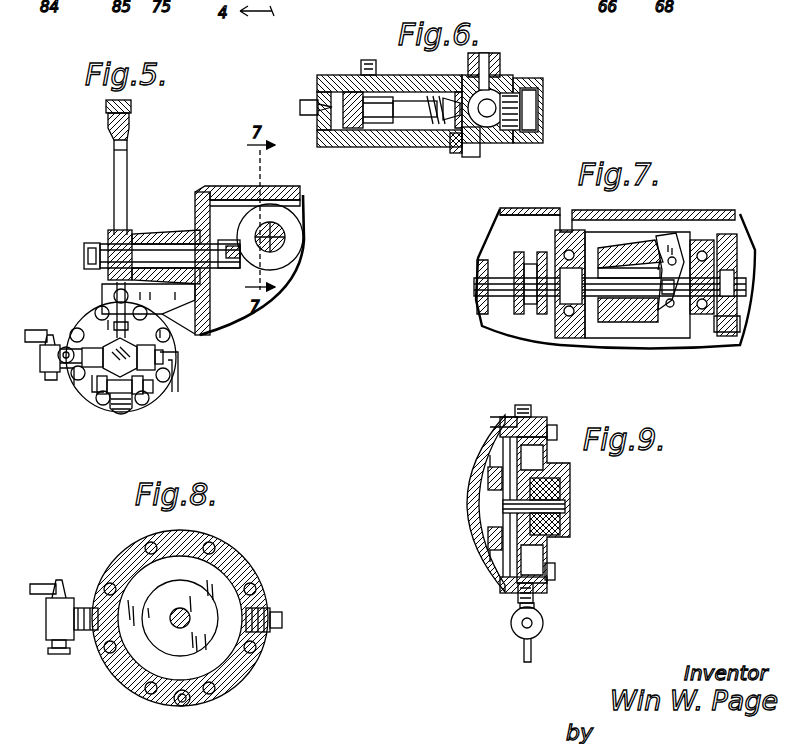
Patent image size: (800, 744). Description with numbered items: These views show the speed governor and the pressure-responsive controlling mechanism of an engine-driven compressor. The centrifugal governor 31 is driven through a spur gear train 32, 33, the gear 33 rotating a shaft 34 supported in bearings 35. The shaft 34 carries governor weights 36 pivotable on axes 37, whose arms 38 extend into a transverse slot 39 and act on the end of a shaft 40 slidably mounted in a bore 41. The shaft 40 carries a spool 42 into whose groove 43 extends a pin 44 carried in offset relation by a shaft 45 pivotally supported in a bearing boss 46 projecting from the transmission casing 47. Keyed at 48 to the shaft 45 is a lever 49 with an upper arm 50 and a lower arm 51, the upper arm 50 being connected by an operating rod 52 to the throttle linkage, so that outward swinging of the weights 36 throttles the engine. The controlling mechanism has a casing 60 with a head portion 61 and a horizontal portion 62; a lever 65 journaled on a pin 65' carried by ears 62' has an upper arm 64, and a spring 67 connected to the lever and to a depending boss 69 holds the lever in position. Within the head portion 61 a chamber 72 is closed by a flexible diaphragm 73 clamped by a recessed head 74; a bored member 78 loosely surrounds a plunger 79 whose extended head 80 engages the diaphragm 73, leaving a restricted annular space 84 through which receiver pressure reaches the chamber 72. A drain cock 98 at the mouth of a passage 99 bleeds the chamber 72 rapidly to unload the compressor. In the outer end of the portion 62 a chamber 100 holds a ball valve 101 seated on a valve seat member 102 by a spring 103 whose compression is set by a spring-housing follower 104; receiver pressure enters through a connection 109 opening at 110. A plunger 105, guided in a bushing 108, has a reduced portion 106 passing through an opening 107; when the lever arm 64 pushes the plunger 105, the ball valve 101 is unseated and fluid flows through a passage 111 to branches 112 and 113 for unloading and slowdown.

In FIG. 7, the centrifugal governor 31 is at (664, 232).
In FIG. 7, the spur gear 32 is at (742, 324).
In FIG. 7, the spur gear 33 is at (740, 258).
In FIG. 7, the shaft 34 is at (612, 322).
In FIG. 7, the bearings 35 is at (708, 250).
In FIG. 7, the governor weights 36 is at (622, 248).
In FIG. 7, the axes 37 is at (676, 258).
In FIG. 7, the arms 38 is at (660, 236).
In FIG. 7, the transverse slot 39 is at (676, 298).
In FIG. 5, the shaft 40 is at (284, 254).
In FIG. 7, the shaft 40 is at (570, 298).
In FIG. 7, the bore 41 is at (592, 240).
In FIG. 5, the spool 42 is at (283, 225).
In FIG. 7, the spool 42 is at (478, 296).
In FIG. 5, the groove 43 is at (286, 240).
In FIG. 7, the groove 43 is at (535, 252).
In FIG. 5, the pin 44 is at (232, 244).
In FIG. 5, the shaft 45 is at (158, 242).
In FIG. 5, the bearing boss 46 is at (176, 232).
In FIG. 5, the transmission casing 47 is at (204, 194).
In FIG. 5, the key 48 is at (116, 254).
In FIG. 5, the lever 49 is at (114, 180).
In FIG. 5, the upper arm 50 is at (128, 148).
In FIG. 5, the lower arm 51 is at (110, 302).
In FIG. 5, the operating rod 52 is at (105, 122).
In FIG. 5, the casing 60 is at (148, 343).
In FIG. 5, the casing head portion 61 is at (73, 330).
In FIG. 8, the casing head portion 61 is at (248, 578).
In FIG. 9, the casing head portion 61 is at (515, 420).
In FIG. 6, the horizontal casing portion 62 is at (387, 99).
In FIG. 5, the ears 62' is at (125, 401).
In FIG. 6, the upper arm 64 is at (350, 126).
In FIG. 5, the lever 65 is at (106, 410).
In FIG. 6, the pin 65' is at (359, 53).
In FIG. 5, the spring 67 is at (121, 414).
In FIG. 5, the depending boss 69 is at (140, 392).
In FIG. 8, the chamber 72 is at (246, 674).
In FIG. 9, the chamber 72 is at (523, 547).
In FIG. 8, the flexible diaphragm 73 is at (128, 642).
In FIG. 9, the flexible diaphragm 73 is at (493, 462).
In FIG. 9, the recessed head 74 is at (468, 482).
In FIG. 9, the bored member 78 is at (527, 523).
In FIG. 6, the plunger 79 is at (316, 108).
In FIG. 8, the plunger 79 is at (190, 612).
In FIG. 9, the plunger 79 is at (560, 506).
In FIG. 8, the extended head 80 is at (162, 648).
In FIG. 9, the extended head 80 is at (495, 490).
In FIG. 9, the annular space 84 is at (556, 488).
In FIG. 5, the drain cock 98 is at (44, 356).
In FIG. 8, the drain cock 98 is at (56, 626).
In FIG. 9, the drain cock 98 is at (512, 624).
In FIG. 8, the passage 99 is at (104, 640).
In FIG. 9, the passage 99 is at (548, 572).
In FIG. 6, the chamber 100 is at (500, 92).
In FIG. 6, the ball valve 101 is at (510, 110).
In FIG. 6, the valve seat member 102 is at (452, 97).
In FIG. 6, the spring 103 is at (540, 124).
In FIG. 6, the spring-housing follower 104 is at (543, 86).
In FIG. 6, the plunger 105 is at (418, 118).
In FIG. 6, the reduced portion 106 is at (458, 140).
In FIG. 6, the opening 107 is at (430, 94).
In FIG. 6, the bushing 108 is at (395, 122).
In FIG. 5, the connection 109 is at (178, 380).
In FIG. 6, the connection 109 is at (486, 80).
In FIG. 6, the opening 110 is at (493, 70).
In FIG. 5, the passage 111 is at (77, 358).
In FIG. 6, the passage 111 is at (480, 148).
In FIG. 5, the branch 112 is at (93, 357).
In FIG. 5, the branch 113 is at (63, 345).